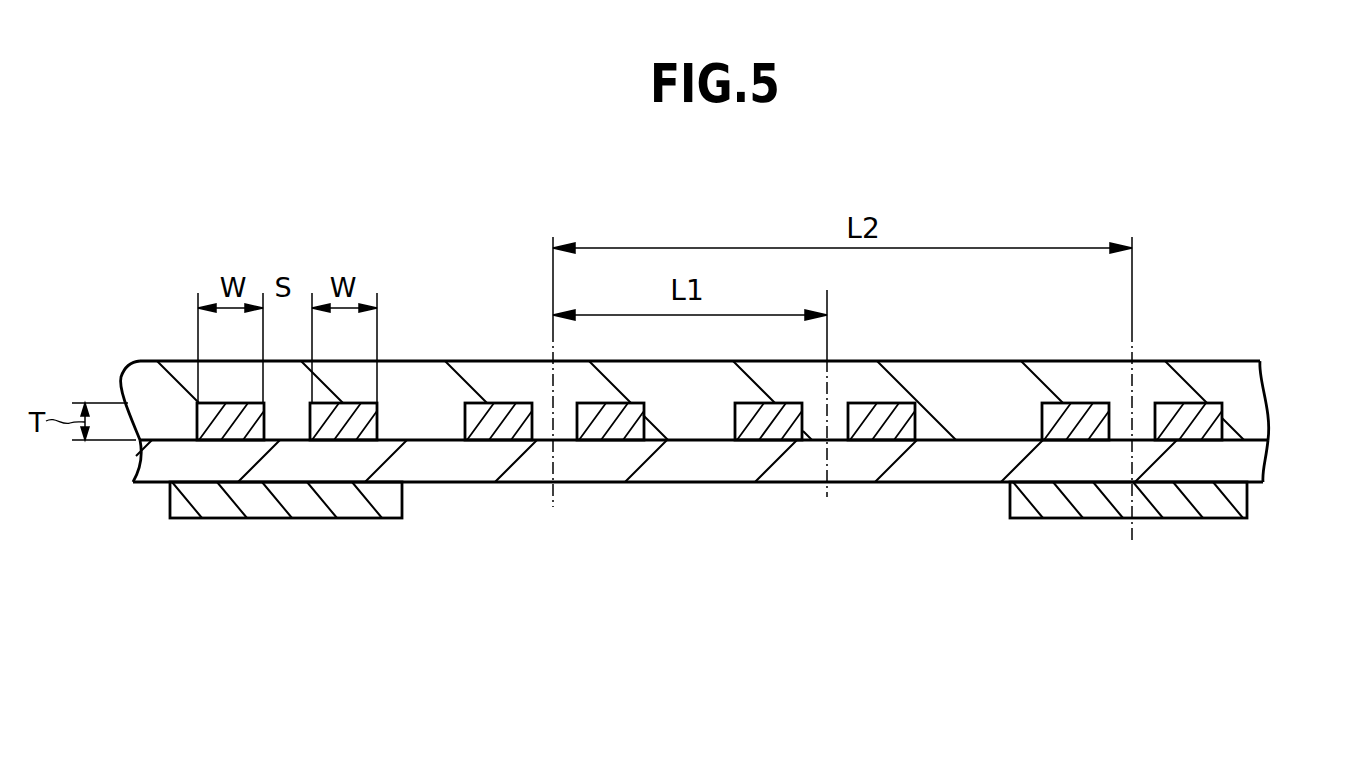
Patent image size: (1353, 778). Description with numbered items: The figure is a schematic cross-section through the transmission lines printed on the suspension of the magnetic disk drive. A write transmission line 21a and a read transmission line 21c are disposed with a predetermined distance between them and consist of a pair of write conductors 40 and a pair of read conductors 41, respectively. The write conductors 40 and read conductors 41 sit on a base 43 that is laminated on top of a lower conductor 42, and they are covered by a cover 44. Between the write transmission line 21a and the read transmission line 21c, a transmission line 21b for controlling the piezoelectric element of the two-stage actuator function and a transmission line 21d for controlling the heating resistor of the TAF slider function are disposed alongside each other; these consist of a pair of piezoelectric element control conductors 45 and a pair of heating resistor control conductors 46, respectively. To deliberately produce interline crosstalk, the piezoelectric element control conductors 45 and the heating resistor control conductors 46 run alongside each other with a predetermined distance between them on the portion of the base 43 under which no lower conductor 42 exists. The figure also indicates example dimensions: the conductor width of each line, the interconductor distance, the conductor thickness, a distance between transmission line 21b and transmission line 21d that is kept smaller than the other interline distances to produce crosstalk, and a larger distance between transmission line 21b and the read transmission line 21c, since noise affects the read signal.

The write conductors 40 is at (333, 418).
The read conductors 41 is at (1177, 417).
The lower conductor 42 is at (1237, 510).
The base 43 is at (1237, 465).
The cover 44 is at (1237, 403).
The piezoelectric element control conductors 45 is at (603, 417).
The heating resistor control conductors 46 is at (877, 417).
The write transmission line 21a is at (287, 515).
The transmission line for controlling piezoelectric element 21b is at (555, 515).
The read transmission line 21c is at (1132, 515).
The transmission line for controlling heating resistor 21d is at (826, 515).